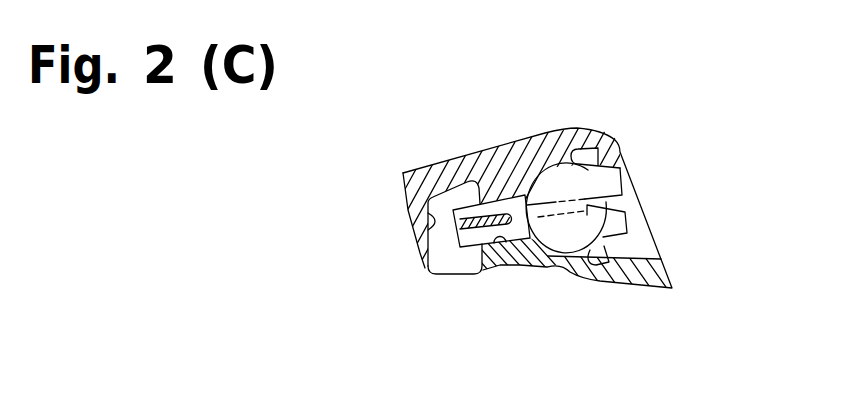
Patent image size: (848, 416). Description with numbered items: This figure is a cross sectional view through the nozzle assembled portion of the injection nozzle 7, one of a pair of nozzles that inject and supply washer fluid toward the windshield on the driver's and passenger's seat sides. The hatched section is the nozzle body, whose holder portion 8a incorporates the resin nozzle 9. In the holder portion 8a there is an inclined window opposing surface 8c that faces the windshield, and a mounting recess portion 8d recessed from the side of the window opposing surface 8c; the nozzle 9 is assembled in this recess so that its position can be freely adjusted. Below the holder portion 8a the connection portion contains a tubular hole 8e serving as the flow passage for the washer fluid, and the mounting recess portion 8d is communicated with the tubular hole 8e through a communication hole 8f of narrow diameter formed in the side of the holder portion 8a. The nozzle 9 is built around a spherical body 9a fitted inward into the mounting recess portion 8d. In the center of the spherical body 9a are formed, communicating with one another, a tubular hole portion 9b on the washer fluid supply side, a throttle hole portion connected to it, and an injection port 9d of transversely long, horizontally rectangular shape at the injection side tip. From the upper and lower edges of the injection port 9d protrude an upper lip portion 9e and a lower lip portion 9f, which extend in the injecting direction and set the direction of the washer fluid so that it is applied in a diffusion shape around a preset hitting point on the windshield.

The injection nozzle 7 is at (600, 106).
The holder portion 8a is at (488, 167).
The window opposing surface 8c is at (672, 273).
The mounting recess portion 8d is at (590, 167).
The tubular hole 8e is at (418, 238).
The communication hole 8f is at (495, 239).
The nozzle 9 is at (570, 250).
The spherical body 9a is at (553, 234).
The tubular hole portion 9b is at (545, 213).
The injection port 9d is at (602, 217).
The upper lip portion 9e is at (607, 183).
The lower lip portion 9f is at (617, 223).